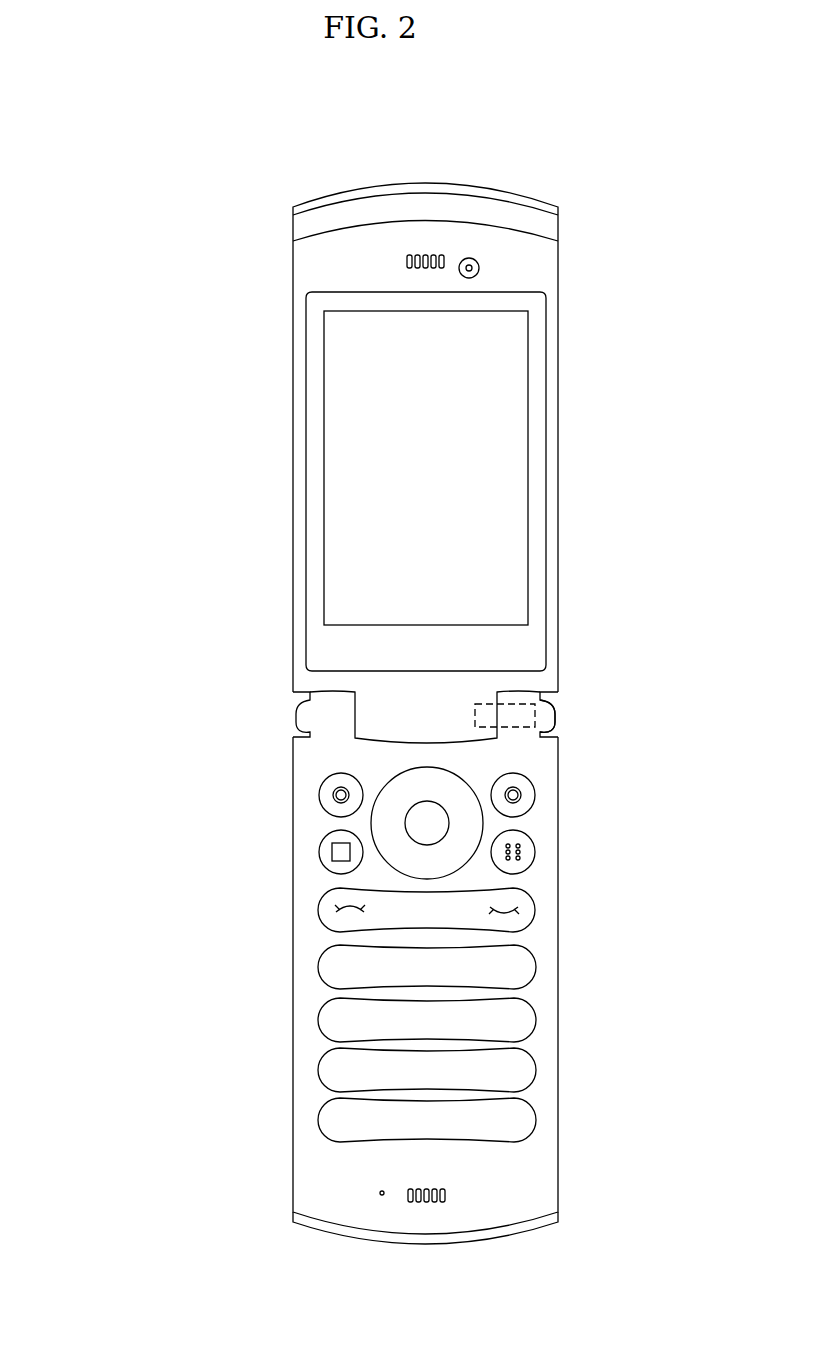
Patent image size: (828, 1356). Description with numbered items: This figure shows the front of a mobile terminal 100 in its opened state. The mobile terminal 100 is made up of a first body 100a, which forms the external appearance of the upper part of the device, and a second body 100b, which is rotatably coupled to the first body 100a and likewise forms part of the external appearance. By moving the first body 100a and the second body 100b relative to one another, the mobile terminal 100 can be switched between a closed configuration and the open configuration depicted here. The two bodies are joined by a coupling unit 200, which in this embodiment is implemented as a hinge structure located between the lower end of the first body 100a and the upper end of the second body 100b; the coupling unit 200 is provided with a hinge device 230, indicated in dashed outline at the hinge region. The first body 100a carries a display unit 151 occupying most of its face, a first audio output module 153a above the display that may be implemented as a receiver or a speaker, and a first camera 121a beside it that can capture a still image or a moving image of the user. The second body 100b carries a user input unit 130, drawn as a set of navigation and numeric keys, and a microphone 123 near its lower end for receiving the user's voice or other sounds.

The mobile terminal 100 is at (150, 196).
The first body 100a is at (300, 265).
The second body 100b is at (553, 1176).
The first camera 121a is at (481, 262).
The microphone 123 is at (405, 1200).
The user input unit 130 is at (520, 1018).
The display unit 151 is at (343, 462).
The first audio output module 153a is at (428, 253).
The coupling unit 200 is at (568, 712).
The hinge device 230 is at (528, 694).